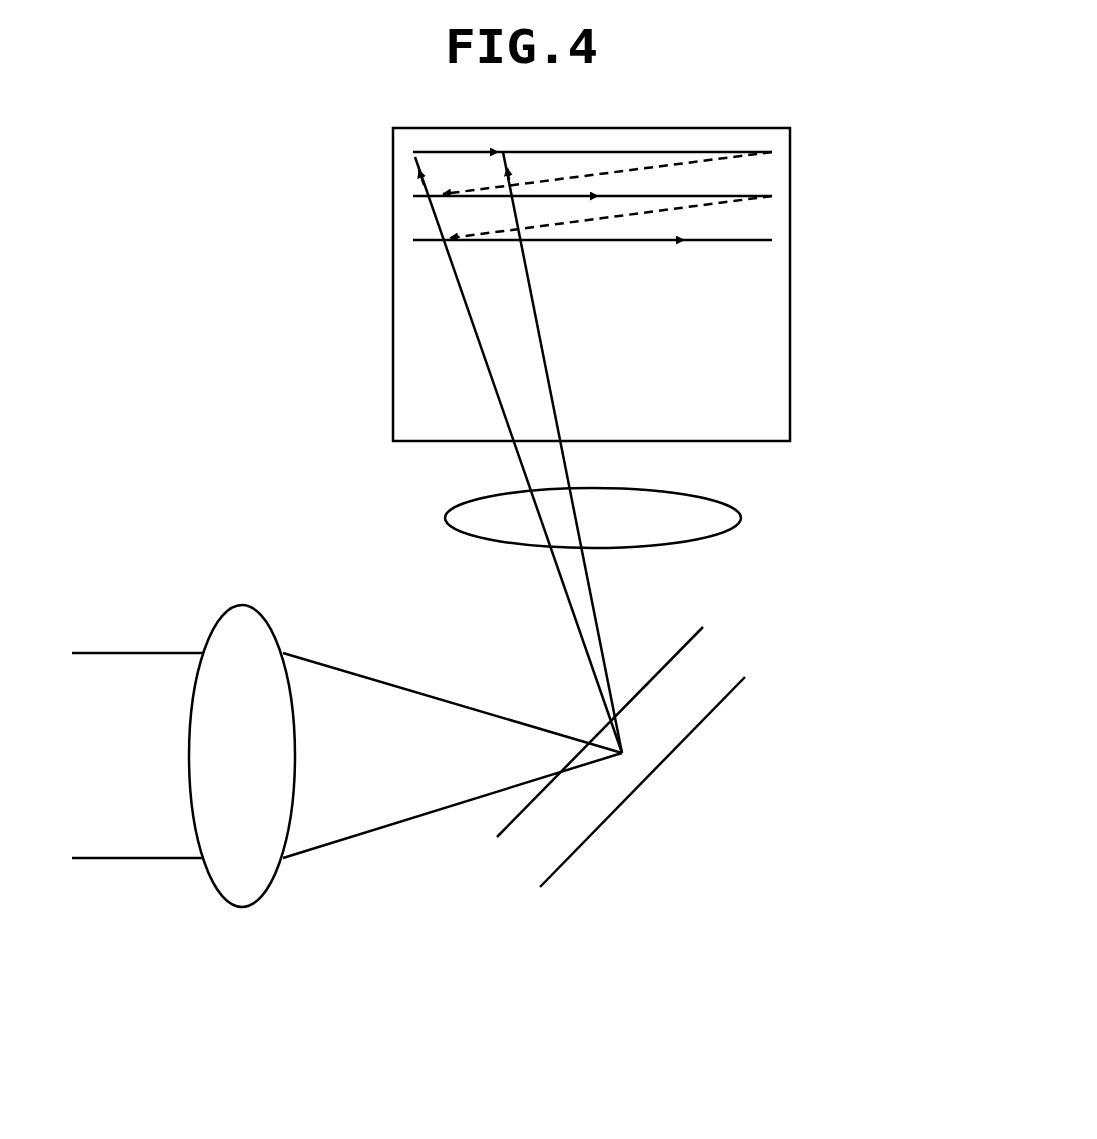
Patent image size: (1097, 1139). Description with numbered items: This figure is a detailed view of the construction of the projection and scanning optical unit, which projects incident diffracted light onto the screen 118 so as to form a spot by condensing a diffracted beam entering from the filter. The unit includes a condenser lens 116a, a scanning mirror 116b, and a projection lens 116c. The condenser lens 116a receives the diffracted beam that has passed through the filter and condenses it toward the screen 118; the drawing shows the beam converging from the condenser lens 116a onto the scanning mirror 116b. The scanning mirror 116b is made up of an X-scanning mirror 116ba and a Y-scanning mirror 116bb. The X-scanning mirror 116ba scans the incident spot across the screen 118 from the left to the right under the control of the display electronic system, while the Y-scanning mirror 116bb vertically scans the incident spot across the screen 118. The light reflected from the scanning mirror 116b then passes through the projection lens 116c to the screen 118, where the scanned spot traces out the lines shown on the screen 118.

The screen 118 is at (790, 364).
The projection lens 116c is at (742, 518).
The condenser lens 116a is at (233, 887).
The scanning mirror 116b is at (581, 852).
The X-scanning mirror 116ba is at (510, 840).
The Y-scanning mirror 116bb is at (570, 843).